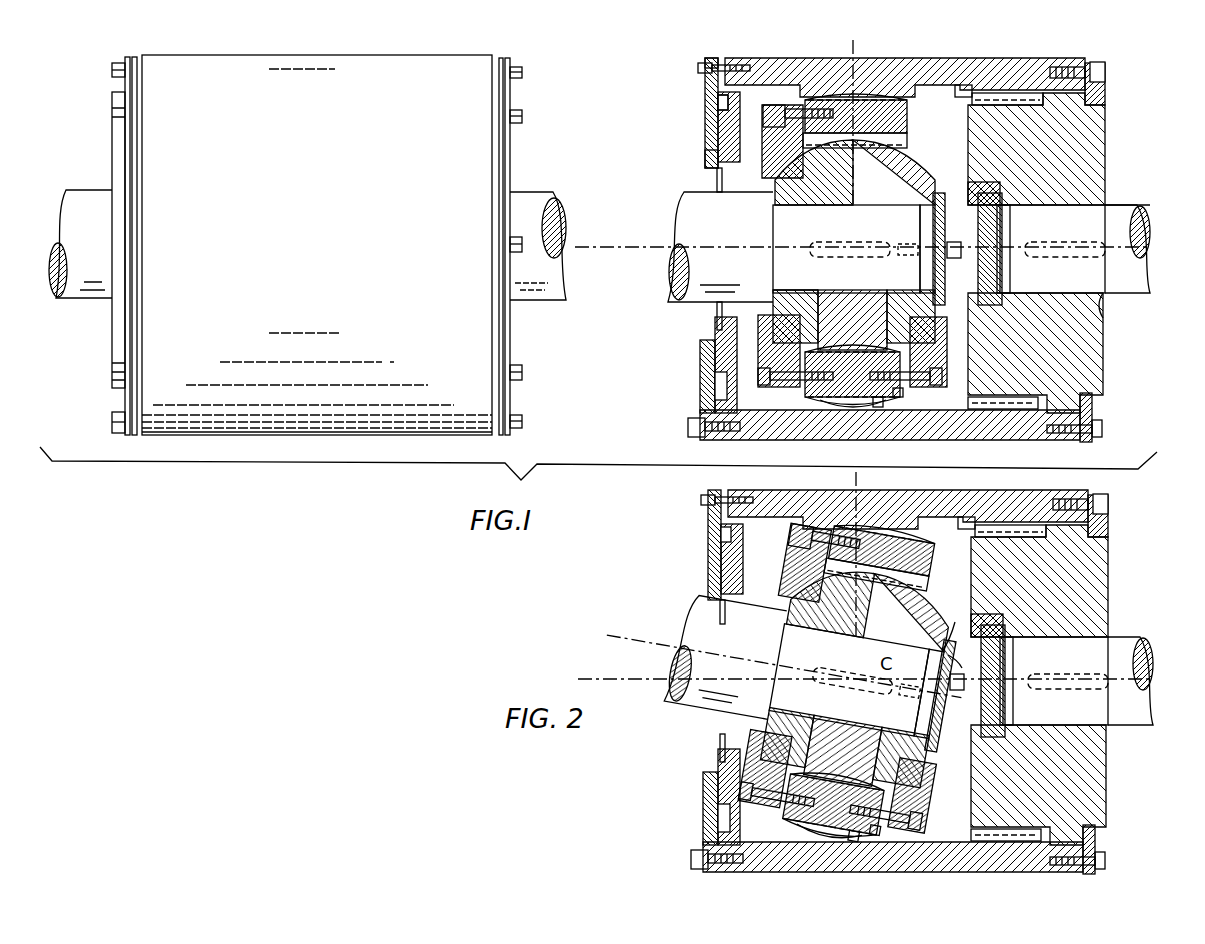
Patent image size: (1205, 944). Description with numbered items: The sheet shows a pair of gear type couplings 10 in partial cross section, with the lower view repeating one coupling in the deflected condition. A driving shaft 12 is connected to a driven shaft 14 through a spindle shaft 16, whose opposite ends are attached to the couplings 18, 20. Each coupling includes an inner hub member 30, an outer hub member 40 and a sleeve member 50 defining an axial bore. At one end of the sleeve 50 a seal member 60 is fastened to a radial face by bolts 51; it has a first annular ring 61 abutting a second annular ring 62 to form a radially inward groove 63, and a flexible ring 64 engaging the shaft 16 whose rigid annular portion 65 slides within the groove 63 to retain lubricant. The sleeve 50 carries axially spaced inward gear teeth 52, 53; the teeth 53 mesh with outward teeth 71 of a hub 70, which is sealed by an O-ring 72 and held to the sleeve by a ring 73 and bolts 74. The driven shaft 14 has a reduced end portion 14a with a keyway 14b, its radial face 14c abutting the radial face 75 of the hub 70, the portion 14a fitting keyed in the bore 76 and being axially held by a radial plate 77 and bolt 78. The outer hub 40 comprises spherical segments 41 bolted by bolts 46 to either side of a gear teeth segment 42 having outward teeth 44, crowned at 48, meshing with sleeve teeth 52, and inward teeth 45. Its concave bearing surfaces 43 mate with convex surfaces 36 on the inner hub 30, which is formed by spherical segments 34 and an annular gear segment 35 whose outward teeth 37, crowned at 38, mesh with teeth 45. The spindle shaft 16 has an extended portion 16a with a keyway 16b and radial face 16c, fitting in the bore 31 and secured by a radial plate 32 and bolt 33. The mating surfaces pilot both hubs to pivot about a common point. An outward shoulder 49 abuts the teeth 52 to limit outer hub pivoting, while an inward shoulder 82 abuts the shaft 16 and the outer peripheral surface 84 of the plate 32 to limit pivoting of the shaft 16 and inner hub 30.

In FIG. 1, the gear type couplings 10 is at (513, 50).
In FIG. 1, the driving shaft 12 is at (97, 190).
In FIG. 1, the driven shaft 14 is at (1140, 281).
In FIG. 2, the driven shaft 14 is at (1150, 722).
In FIG. 1, the reduced diameter end portion 14a is at (1045, 231).
In FIG. 1, the longitudinal keyway 14b is at (1092, 231).
In FIG. 1, the radial face 14c is at (1103, 305).
In FIG. 1, the spindle shaft 16 is at (528, 207).
In FIG. 2, the spindle shaft 16 is at (680, 712).
In FIG. 1, the reduced diameter extended portion 16a is at (900, 231).
In FIG. 1, the longitudinal keyway 16b is at (829, 240).
In FIG. 1, the radial face 16c is at (778, 290).
In FIG. 1, the gear type coupling 18 is at (305, 437).
In FIG. 1, the gear type coupling 20 is at (718, 441).
In FIG. 2, the gear type coupling 20 is at (1118, 567).
In FIG. 1, the inner hub member 30 is at (838, 175).
In FIG. 2, the inner hub member 30 is at (889, 610).
In FIG. 1, the inner bore 31 is at (775, 206).
In FIG. 1, the radial plate 32 is at (945, 190).
In FIG. 1, the bolt 33 is at (952, 245).
In FIG. 1, the spherical segments 34 is at (807, 313).
In FIG. 1, the inner hub annular gear teeth segment 35 is at (864, 326).
In FIG. 1, the convex bearing surfaces 36 is at (757, 325).
In FIG. 2, the convex bearing surfaces 36 is at (928, 790).
In FIG. 1, the gear teeth 37 is at (812, 386).
In FIG. 2, the gear teeth 37 is at (812, 788).
In FIG. 1, the crowning 38 is at (836, 352).
In FIG. 2, the crowning 38 is at (802, 806).
In FIG. 1, the outer hub member 40 is at (865, 118).
In FIG. 2, the outer hub member 40 is at (864, 562).
In FIG. 1, the spherical segments 41 is at (790, 346).
In FIG. 1, the outer hub gear teeth segment 42 is at (865, 378).
In FIG. 1, the concave bearing surfaces 43 is at (778, 320).
In FIG. 2, the concave bearing surfaces 43 is at (928, 757).
In FIG. 1, the gear teeth 44 is at (862, 402).
In FIG. 2, the gear teeth 44 is at (826, 820).
In FIG. 1, the gear teeth 45 is at (900, 398).
In FIG. 1, the bolts 46 is at (760, 376).
In FIG. 1, the crowning 48 is at (884, 404).
In FIG. 2, the crowning 48 is at (869, 820).
In FIG. 2, the annular shoulder portion 49 is at (778, 560).
In FIG. 1, the sleeve member 50 is at (1000, 75).
In FIG. 2, the sleeve member 50 is at (840, 520).
In FIG. 1, the bolts 51 is at (702, 61).
In FIG. 1, the gear teeth 52 is at (908, 90).
In FIG. 2, the gear teeth 52 is at (835, 530).
In FIG. 1, the gear teeth 53 is at (962, 88).
In FIG. 1, the seal member 60 is at (713, 125).
In FIG. 1, the annular ring 61 is at (705, 66).
In FIG. 1, the seal plate 62 is at (722, 118).
In FIG. 1, the annular groove 63 is at (722, 100).
In FIG. 1, the circumferentially flexible ring 64 is at (718, 186).
In FIG. 1, the rigid annular portion 65 is at (712, 160).
In FIG. 1, the hub 70 is at (1092, 126).
In FIG. 1, the gear teeth 71 is at (1025, 92).
In FIG. 1, the O-ring 72 is at (1085, 82).
In FIG. 1, the ring 73 is at (1092, 405).
In FIG. 1, the bolts 74 is at (1102, 428).
In FIG. 1, the radial face 75 is at (1105, 356).
In FIG. 1, the inner bore 76 is at (1105, 203).
In FIG. 1, the radial plate 77 is at (980, 262).
In FIG. 1, the bolt 78 is at (983, 215).
In FIG. 2, the shoulder portion 82 is at (958, 628).
In FIG. 2, the outer peripheral surface 84 is at (955, 642).